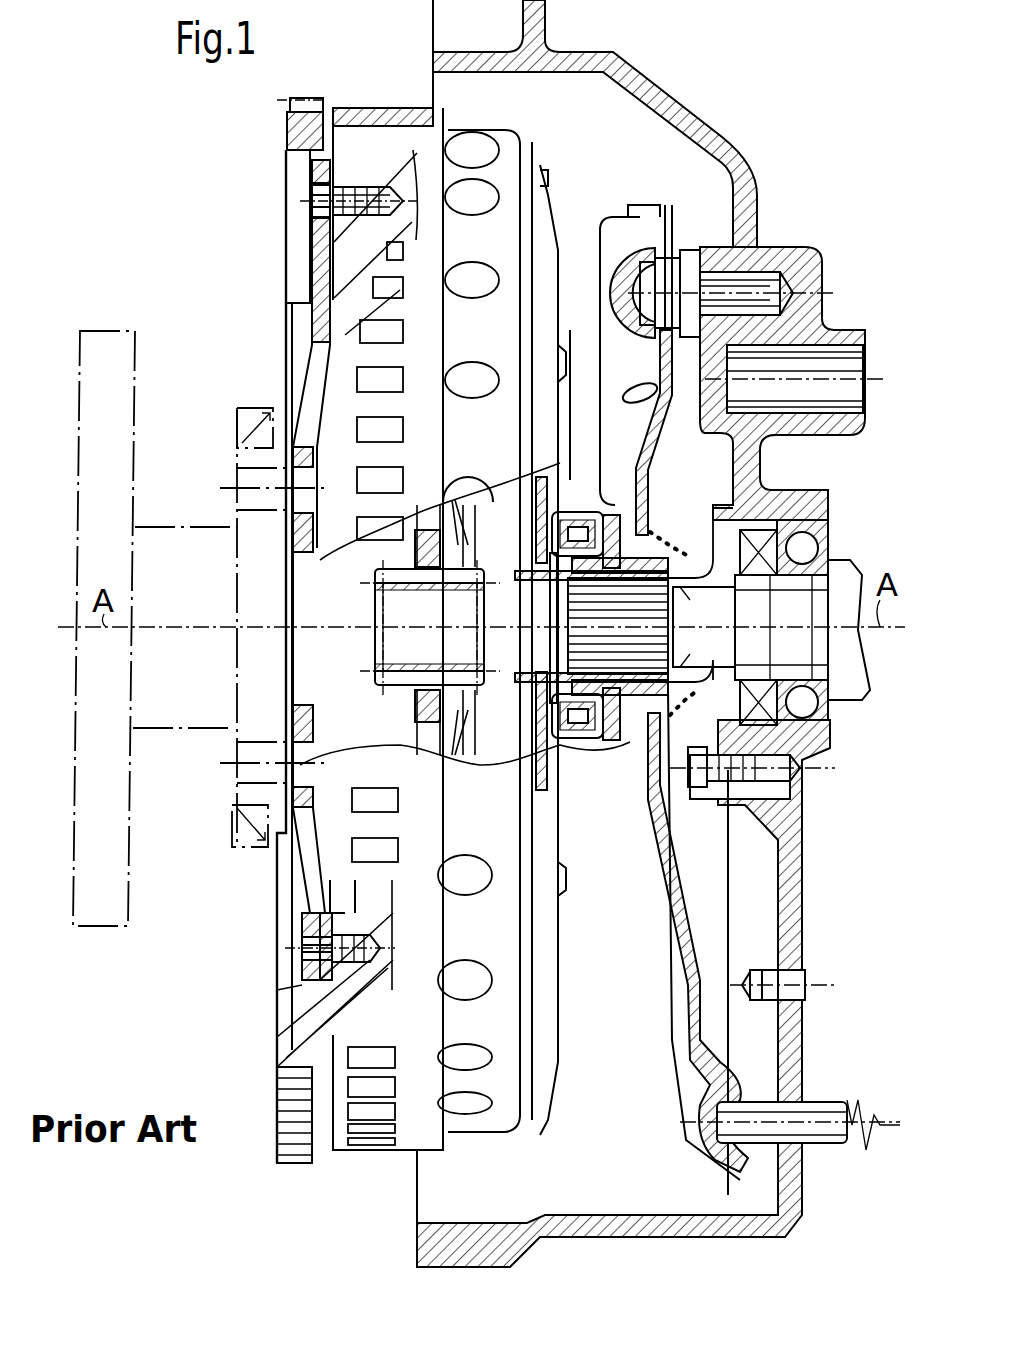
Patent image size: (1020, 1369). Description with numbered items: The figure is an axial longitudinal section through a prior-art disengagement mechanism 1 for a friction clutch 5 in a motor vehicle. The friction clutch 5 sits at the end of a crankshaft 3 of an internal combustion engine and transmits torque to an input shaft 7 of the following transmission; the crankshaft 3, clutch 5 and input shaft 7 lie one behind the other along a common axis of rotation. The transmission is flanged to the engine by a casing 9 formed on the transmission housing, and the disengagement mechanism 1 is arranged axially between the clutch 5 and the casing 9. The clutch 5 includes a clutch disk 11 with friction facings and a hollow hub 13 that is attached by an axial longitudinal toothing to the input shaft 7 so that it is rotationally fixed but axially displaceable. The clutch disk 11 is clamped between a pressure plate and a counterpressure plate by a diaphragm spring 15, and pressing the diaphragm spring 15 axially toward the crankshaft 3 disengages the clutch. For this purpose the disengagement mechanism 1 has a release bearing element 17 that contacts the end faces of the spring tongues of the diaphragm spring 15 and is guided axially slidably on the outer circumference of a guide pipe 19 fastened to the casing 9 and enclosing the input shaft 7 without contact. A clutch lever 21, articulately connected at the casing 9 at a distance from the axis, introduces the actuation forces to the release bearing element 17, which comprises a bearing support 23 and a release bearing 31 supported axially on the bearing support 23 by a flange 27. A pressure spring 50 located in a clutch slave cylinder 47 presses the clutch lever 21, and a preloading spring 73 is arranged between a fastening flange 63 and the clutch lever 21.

The disengagement mechanism 1 is at (594, 856).
The crankshaft 3 is at (178, 718).
The friction clutch 5 is at (262, 217).
The input shaft 7 is at (846, 680).
The casing 9 is at (718, 142).
The clutch disk 11 is at (416, 742).
The hollow hub 13 is at (377, 575).
The diaphragm spring 15 is at (552, 514).
The release bearing element 17 is at (568, 756).
The guide pipe 19 is at (529, 668).
The clutch lever 21 is at (646, 458).
The bearing support 23 is at (630, 520).
The flange 27 is at (633, 712).
The release bearing 31 is at (513, 772).
The clutch slave cylinder 47 is at (826, 1136).
The pressure spring 50 is at (865, 1086).
The fastening flange 63 is at (706, 525).
The preloading spring 73 is at (686, 719).